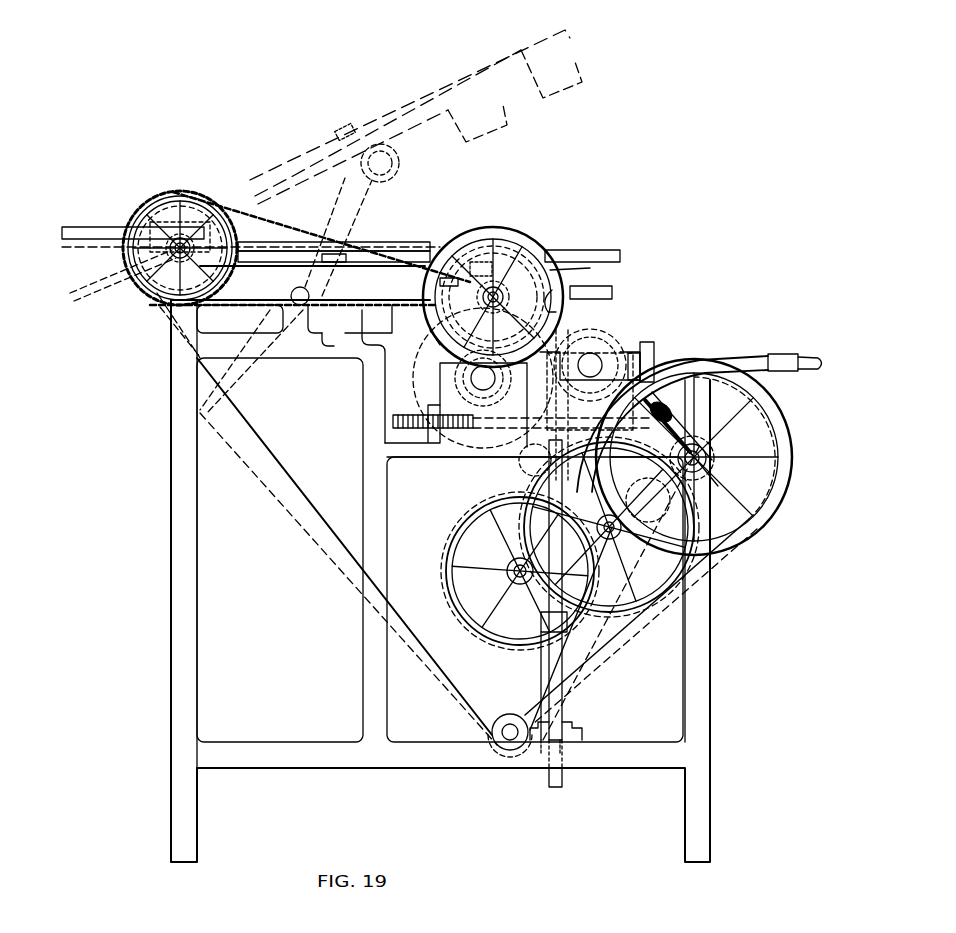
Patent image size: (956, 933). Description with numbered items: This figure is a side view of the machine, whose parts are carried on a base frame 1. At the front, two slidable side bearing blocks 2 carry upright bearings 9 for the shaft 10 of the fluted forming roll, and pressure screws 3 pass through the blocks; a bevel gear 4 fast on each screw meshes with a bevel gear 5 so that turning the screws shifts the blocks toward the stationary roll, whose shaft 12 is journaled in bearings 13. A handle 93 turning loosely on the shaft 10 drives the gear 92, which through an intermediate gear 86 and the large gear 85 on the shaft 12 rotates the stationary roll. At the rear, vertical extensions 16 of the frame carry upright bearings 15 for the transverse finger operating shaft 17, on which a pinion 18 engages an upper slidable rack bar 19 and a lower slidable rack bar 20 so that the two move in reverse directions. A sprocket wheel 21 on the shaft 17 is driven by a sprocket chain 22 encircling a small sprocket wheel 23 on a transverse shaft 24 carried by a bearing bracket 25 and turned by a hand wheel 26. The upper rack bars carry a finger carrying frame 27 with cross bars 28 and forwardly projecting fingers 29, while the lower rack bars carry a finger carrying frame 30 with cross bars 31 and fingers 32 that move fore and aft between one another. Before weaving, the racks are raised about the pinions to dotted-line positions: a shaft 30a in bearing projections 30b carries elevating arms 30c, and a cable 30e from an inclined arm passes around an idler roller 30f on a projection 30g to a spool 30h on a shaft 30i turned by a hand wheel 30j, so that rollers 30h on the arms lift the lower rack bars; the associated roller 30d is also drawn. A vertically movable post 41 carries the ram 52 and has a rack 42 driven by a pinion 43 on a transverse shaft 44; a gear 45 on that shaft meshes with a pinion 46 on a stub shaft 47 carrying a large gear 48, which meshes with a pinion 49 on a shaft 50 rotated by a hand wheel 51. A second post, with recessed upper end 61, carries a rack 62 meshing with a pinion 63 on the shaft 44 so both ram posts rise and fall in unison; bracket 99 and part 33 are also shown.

The base frame 1 is at (170, 677).
The slidable side bearing block 2 is at (662, 376).
The pressure screw 3 is at (404, 430).
The bevel gear 4 is at (648, 402).
The bevel gear 5 is at (672, 419).
The upright bearing 9 is at (634, 356).
The shaft 10 is at (594, 362).
The shaft 12 is at (483, 390).
The bearing 13 is at (455, 376).
The upright bearing 15 is at (140, 264).
The vertical extension 16 is at (168, 314).
The finger operating shaft 17 is at (188, 244).
The pinion 18 is at (178, 238).
The upper slidable rack bar 19 is at (95, 236).
The lower slidable rack bar 20 is at (262, 273).
The sprocket wheel 21 is at (200, 200).
The sprocket chain 22 is at (306, 240).
The small sprocket wheel 23 is at (436, 312).
The transverse shaft 24 is at (516, 280).
The bearing bracket 25 is at (493, 308).
The hand wheel 26 is at (522, 232).
The finger carrying frame 27 is at (272, 240).
The cross bar 28 is at (258, 220).
The finger 29 is at (572, 252).
The finger carrying frame 30 is at (368, 253).
The shaft 30a is at (310, 295).
The bearing projection 30b is at (326, 340).
The elevating arm 30c is at (398, 170).
The pulley 30d is at (395, 155).
The cable 30e is at (320, 518).
The idler roller 30f is at (492, 730).
The projection 30g is at (495, 744).
The spool 30h is at (690, 580).
The shaft 30i is at (698, 565).
The hand wheel 30j is at (728, 478).
The cross bar 31 is at (332, 245).
The finger 32 is at (488, 262).
The bar 33 is at (612, 292).
The vertically movable post 41 is at (565, 706).
The rack 42 is at (534, 718).
The pinion 43 is at (508, 597).
The transverse shaft 44 is at (506, 570).
The gear 45 is at (506, 650).
The pinion 46 is at (608, 540).
The stub shaft 47 is at (682, 562).
The large gear 48 is at (632, 612).
The pinion 49 is at (714, 466).
The shaft 50 is at (708, 458).
The hand wheel 51 is at (752, 530).
The ram 52 is at (560, 300).
The upper end 61 is at (590, 268).
The rack 62 is at (540, 640).
The pinion 63 is at (518, 586).
The large gear 85 is at (413, 357).
The intermediate gear 86 is at (520, 464).
The gear 92 is at (604, 332).
The handle 93 is at (762, 354).
The bracket 99 is at (647, 362).